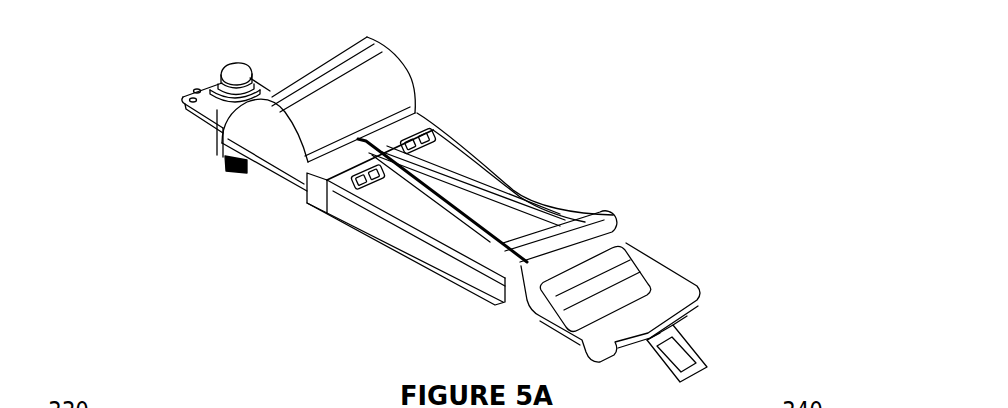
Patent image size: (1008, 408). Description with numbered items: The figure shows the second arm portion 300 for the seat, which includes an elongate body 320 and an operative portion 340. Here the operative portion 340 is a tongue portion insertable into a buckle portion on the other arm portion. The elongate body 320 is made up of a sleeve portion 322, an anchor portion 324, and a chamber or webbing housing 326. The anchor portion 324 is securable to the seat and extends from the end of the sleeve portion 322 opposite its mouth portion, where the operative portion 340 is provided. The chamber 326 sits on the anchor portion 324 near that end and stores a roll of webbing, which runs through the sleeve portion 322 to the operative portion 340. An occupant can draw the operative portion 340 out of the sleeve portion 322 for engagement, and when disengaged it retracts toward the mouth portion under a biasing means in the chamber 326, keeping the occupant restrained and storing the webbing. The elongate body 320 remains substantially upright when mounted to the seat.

The second arm portion 300 is at (126, 91).
The elongate body 320 is at (480, 163).
The sleeve portion 322 is at (548, 212).
The anchor portion 324 is at (217, 82).
The chamber (webbing housing) 326 is at (387, 102).
The operative portion (tongue portion) 340 is at (672, 272).